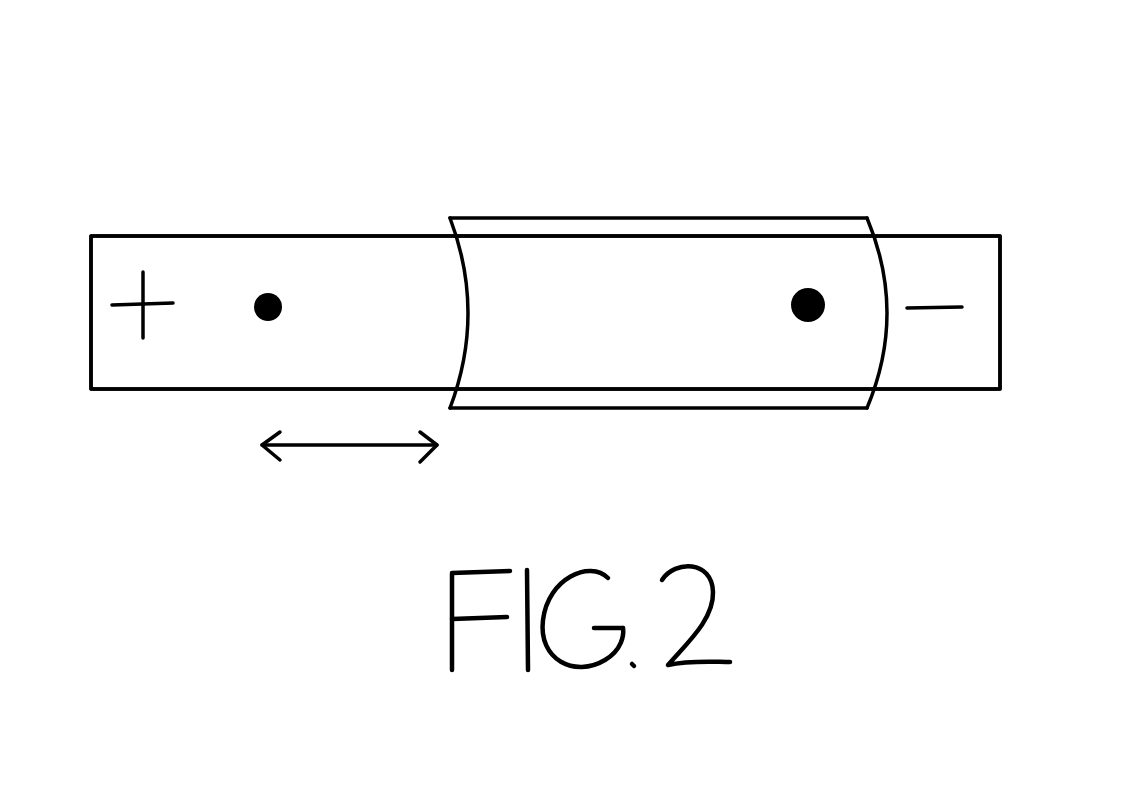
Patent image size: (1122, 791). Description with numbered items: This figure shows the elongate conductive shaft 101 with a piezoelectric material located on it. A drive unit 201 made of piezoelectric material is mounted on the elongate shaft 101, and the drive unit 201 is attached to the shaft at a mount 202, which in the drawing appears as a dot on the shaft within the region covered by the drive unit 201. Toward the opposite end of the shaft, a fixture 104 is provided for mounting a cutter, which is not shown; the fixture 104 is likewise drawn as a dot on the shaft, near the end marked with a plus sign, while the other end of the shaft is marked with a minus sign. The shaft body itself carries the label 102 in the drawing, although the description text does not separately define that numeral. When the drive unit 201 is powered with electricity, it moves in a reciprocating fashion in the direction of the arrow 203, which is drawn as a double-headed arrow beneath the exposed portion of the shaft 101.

The elongate conductive shaft 101 is at (962, 444).
The battery body 102 is at (967, 220).
The fixture 104 is at (262, 283).
The drive unit 201 is at (607, 203).
The mount 202 is at (810, 327).
The arrow 203 is at (325, 470).